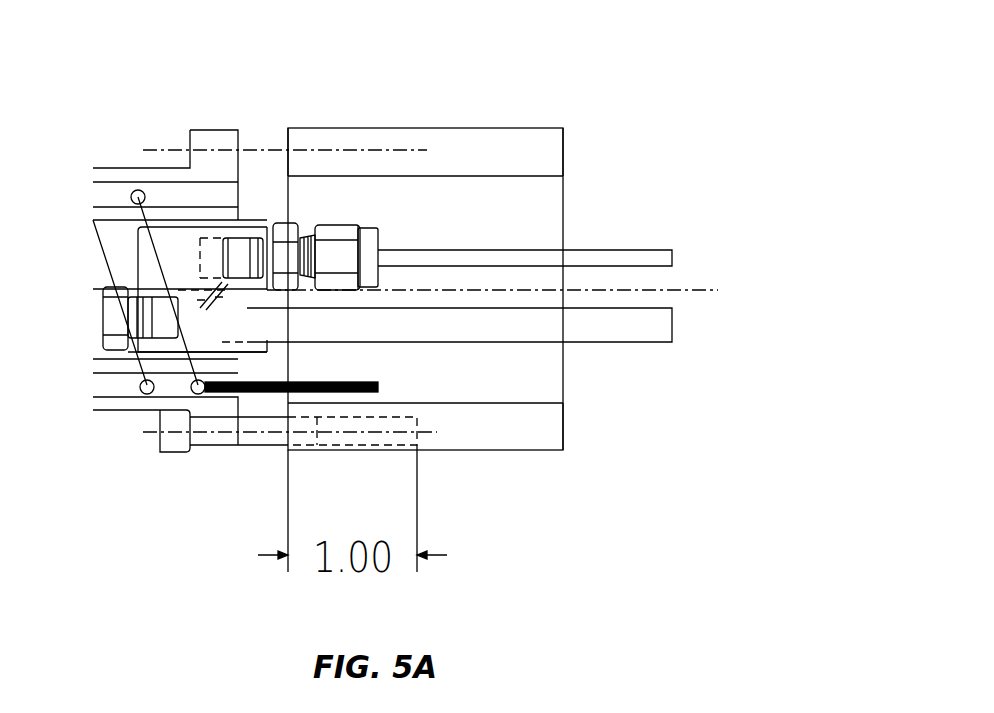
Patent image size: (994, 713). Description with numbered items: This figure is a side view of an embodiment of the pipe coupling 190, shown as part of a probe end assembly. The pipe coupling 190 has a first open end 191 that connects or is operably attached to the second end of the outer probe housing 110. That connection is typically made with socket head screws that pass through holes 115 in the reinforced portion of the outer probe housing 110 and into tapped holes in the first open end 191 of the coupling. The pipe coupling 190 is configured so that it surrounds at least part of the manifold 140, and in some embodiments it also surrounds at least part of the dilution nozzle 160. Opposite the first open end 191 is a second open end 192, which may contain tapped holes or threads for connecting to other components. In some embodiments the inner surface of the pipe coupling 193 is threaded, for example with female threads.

The outer probe housing 110 is at (102, 167).
The manifold 140 is at (178, 263).
The holes 115 is at (210, 443).
The dilution nozzle 160 is at (293, 225).
The pipe coupling 190 is at (358, 128).
The first open end 191 is at (285, 140).
The inner surface of the pipe coupling 193 is at (565, 170).
The second open end 192 is at (563, 412).